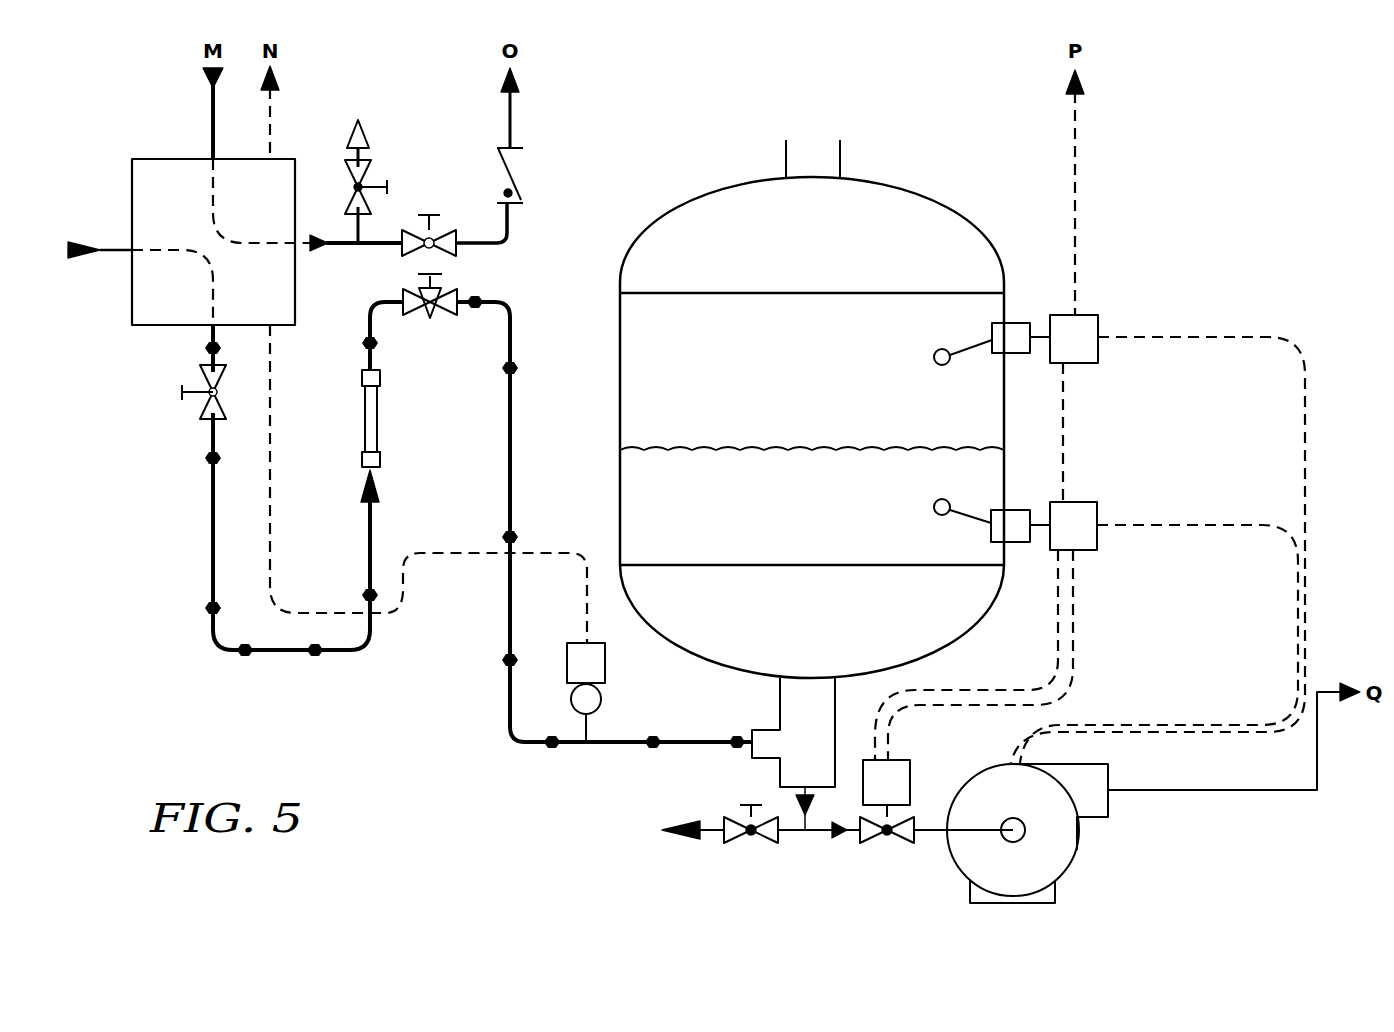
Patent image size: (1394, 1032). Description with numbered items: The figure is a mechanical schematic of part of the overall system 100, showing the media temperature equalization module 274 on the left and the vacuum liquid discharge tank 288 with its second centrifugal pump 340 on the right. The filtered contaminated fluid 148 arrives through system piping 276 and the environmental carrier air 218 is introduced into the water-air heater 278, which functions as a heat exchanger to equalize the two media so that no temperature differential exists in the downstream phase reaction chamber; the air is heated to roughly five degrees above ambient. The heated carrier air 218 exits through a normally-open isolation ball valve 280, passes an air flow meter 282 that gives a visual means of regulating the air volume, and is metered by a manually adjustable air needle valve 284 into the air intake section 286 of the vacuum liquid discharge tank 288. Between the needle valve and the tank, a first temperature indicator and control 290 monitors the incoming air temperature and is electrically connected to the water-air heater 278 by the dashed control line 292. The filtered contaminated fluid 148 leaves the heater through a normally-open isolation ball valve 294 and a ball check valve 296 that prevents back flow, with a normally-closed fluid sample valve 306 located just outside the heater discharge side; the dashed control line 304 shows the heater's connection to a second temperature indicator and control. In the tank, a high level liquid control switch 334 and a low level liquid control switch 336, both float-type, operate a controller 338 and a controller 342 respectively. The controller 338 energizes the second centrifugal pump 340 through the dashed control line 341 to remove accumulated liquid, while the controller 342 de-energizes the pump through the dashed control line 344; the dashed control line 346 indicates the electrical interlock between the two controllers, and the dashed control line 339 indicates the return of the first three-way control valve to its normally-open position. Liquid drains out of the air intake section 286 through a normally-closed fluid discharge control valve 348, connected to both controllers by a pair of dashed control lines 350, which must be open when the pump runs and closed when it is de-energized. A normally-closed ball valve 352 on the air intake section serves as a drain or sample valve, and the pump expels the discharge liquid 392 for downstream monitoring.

The water treatment system 100 is at (1183, 148).
The filtered contaminated fluid 148 is at (210, 138).
The environmental carrier air 218 is at (113, 250).
The media temperature equalization module 274 is at (118, 186).
The system piping 276 is at (207, 103).
The water-air heater 278 is at (155, 217).
The normally-open isolation ball valve 280 is at (200, 405).
The air flow meter 282 is at (378, 418).
The air needle valve 284 is at (410, 318).
The air intake section 286 is at (797, 700).
The vacuum liquid discharge tank 288 is at (680, 203).
The first temperature indicator and control 290 is at (567, 660).
The dashed control line 292 is at (268, 470).
The normally-open isolation ball valve 294 is at (450, 252).
The ball check valve 296 is at (497, 153).
The dashed control line 304 is at (273, 95).
The normally-closed fluid sample valve 306 is at (366, 176).
The high level liquid control switch 334 is at (1013, 323).
The low level liquid control switch 336 is at (1012, 545).
The controller 338 is at (1100, 327).
The dashed control line 339 is at (1075, 200).
The second centrifugal pump 340 is at (1075, 858).
The dashed control line 341 is at (1305, 435).
The controller 342 is at (1098, 513).
The dashed control line 344 is at (1220, 528).
The dashed control line 346 is at (1063, 432).
The normally-closed fluid discharge control valve 348 is at (865, 842).
The pair of dashed control lines 350 is at (1073, 632).
The normally-closed ball valve 352 is at (728, 842).
The discharge liquid 392 is at (1218, 790).